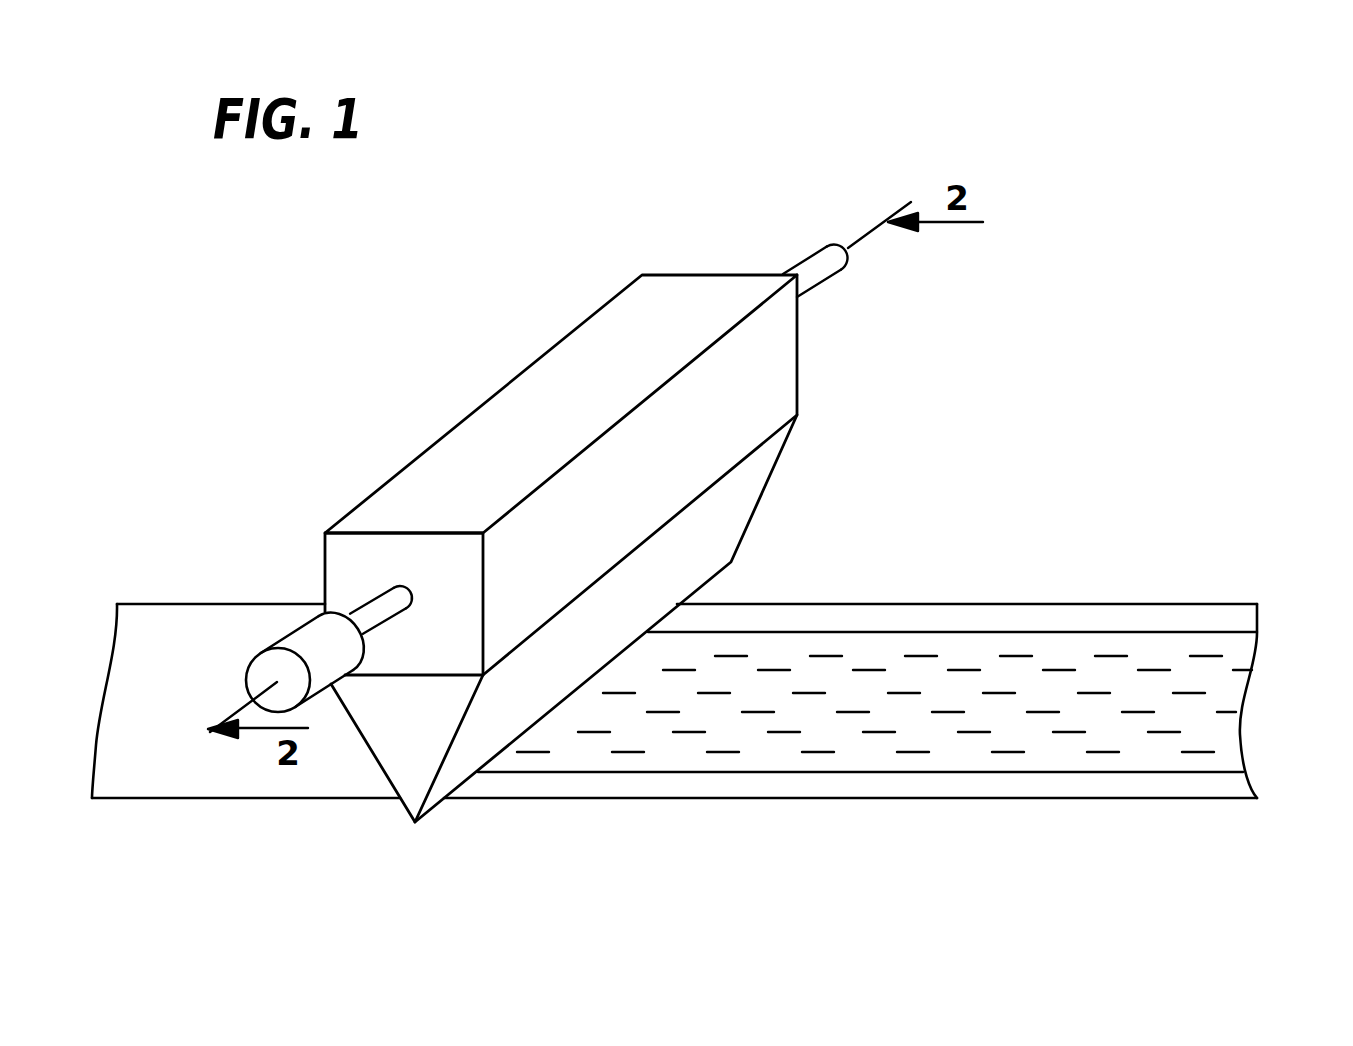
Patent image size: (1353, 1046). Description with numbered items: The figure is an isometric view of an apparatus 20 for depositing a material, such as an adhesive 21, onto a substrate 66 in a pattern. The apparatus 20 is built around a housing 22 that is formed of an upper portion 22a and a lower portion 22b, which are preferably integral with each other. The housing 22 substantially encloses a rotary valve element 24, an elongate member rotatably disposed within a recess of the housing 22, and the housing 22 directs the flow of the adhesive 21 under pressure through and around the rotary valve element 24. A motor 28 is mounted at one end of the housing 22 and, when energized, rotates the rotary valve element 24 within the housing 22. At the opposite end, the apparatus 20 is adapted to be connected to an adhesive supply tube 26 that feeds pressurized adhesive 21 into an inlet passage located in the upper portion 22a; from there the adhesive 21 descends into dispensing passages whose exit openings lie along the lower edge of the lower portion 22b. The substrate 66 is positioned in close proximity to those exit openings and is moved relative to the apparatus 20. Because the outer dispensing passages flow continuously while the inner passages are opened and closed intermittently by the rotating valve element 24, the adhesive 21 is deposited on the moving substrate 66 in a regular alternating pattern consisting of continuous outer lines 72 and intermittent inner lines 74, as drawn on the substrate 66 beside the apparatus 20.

The apparatus 20 is at (481, 324).
The adhesive 21 is at (1055, 668).
The housing 22 is at (705, 293).
The upper portion 22a is at (780, 388).
The lower portion 22b is at (741, 519).
The rotary valve element 24 is at (365, 612).
The adhesive supply tube 26 is at (817, 288).
The motor 28 is at (300, 638).
The substrate 66 is at (138, 660).
The continuous outer lines 72 is at (1158, 632).
The intermittent inner lines 74 is at (1177, 692).